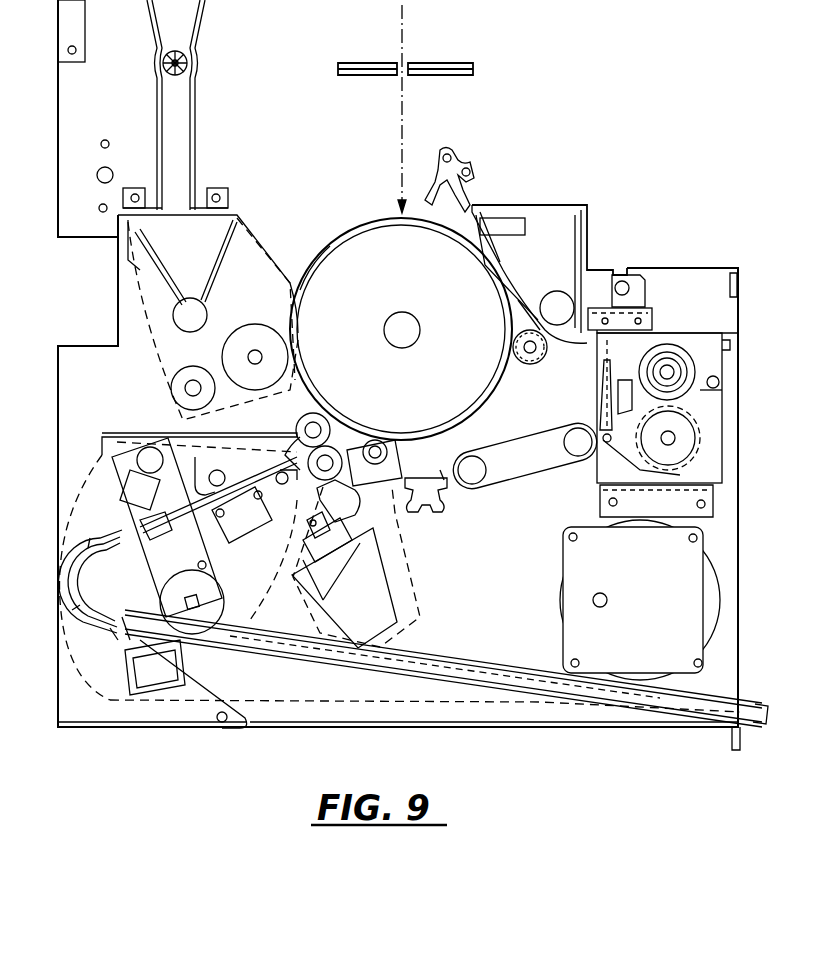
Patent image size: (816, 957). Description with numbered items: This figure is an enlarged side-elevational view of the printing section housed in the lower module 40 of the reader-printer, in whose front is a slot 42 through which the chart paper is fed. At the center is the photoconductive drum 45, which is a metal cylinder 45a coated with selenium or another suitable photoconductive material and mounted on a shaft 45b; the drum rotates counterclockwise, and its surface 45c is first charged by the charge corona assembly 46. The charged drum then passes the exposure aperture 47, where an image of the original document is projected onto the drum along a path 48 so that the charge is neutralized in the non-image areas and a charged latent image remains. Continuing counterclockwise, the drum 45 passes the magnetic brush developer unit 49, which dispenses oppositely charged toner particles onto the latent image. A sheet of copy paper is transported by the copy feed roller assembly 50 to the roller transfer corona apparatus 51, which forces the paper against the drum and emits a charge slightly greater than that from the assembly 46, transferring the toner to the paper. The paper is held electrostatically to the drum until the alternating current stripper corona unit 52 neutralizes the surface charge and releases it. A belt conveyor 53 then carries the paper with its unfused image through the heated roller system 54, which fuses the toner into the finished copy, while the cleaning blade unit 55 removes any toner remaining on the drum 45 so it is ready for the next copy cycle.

The lower module 40 is at (58, 405).
The slot 42 is at (766, 710).
The photoconductive drum 45 is at (365, 220).
The metal cylinder 45a is at (335, 251).
The shaft 45b is at (383, 329).
The surface 45c is at (346, 233).
The charge corona assembly 46 is at (476, 181).
The exposure aperture 47 is at (406, 60).
The path 48 is at (404, 110).
The magnetic brush developer unit 49 is at (143, 319).
The copy feed roller assembly 50 is at (161, 602).
The roller transfer corona apparatus 51 is at (413, 578).
The alternating current stripper corona unit 52 is at (446, 495).
The belt conveyor 53 is at (522, 437).
The heated roller system 54 is at (598, 386).
The cleaning blade unit 55 is at (537, 207).